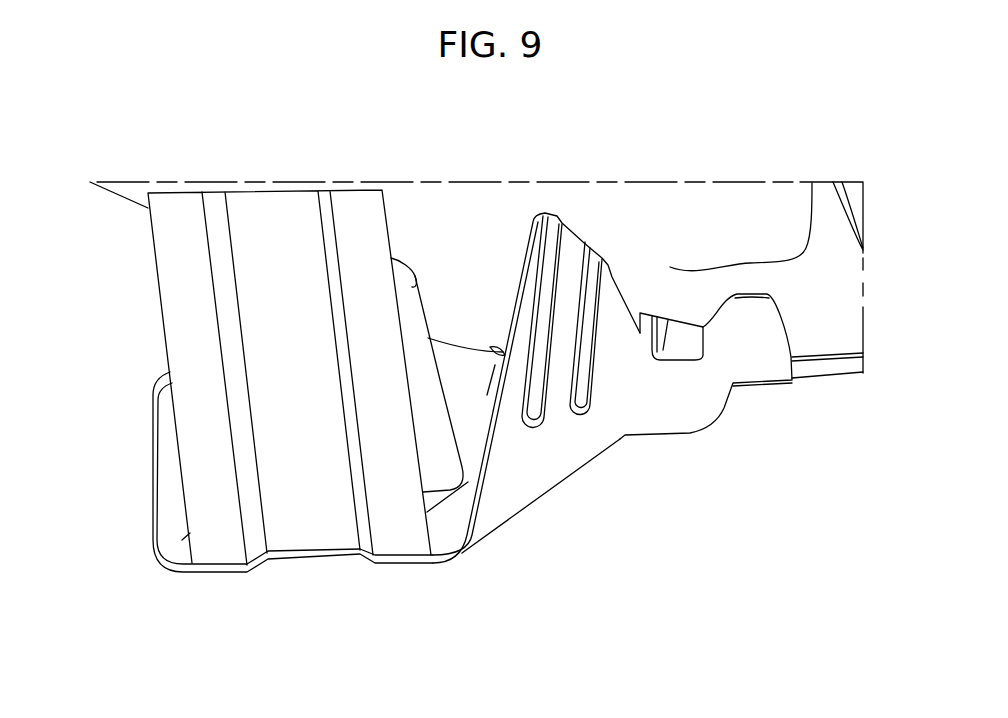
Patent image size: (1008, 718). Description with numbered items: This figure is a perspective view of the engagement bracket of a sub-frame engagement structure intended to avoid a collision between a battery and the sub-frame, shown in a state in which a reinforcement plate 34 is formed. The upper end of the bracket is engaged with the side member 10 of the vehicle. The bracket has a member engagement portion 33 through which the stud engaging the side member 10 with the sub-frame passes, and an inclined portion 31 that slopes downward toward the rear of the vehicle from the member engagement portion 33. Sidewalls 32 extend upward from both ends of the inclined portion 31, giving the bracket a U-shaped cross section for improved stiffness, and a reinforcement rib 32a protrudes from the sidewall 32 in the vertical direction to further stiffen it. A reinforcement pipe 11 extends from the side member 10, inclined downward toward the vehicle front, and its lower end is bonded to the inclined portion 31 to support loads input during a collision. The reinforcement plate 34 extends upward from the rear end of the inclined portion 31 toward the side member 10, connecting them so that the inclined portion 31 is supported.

The side member 10 is at (513, 205).
The reinforcement pipe 11 is at (413, 323).
The inclined portion 31 is at (447, 527).
The sidewall 32 is at (562, 390).
The reinforcement rib 32a is at (578, 367).
The member engagement portion 33 is at (708, 400).
The reinforcement plate 34 is at (187, 313).